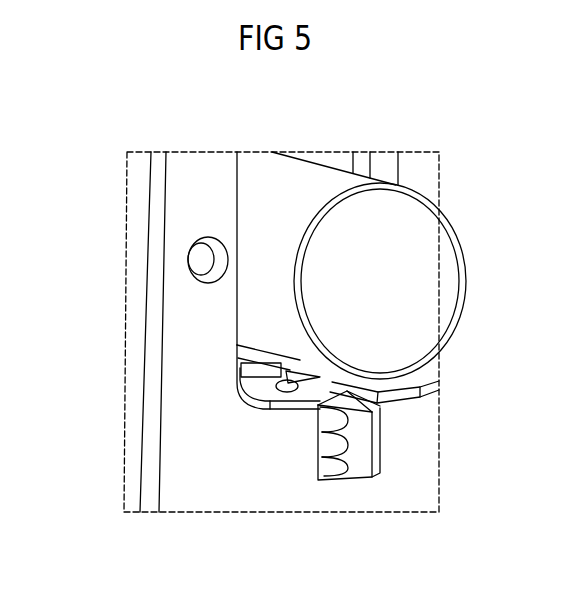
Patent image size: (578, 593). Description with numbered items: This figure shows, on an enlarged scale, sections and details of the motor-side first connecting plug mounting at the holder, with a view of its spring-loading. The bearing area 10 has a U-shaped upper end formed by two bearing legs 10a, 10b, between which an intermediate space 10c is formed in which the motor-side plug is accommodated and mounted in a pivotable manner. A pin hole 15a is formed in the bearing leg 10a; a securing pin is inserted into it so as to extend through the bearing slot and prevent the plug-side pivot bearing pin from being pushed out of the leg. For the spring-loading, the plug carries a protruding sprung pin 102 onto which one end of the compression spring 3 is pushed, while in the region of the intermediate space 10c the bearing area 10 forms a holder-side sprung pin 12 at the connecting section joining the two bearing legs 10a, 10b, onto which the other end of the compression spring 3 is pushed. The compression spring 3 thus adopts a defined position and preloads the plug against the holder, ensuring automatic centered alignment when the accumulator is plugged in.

The bearing area 10 is at (444, 428).
The bearing leg 10a is at (173, 192).
The bearing leg 10b is at (422, 173).
The intermediate space 10c is at (330, 161).
The pin hole 15a is at (196, 262).
The sprung pin 102 is at (300, 386).
The compression spring 3 is at (322, 418).
The holder-side sprung pin 12 is at (327, 483).